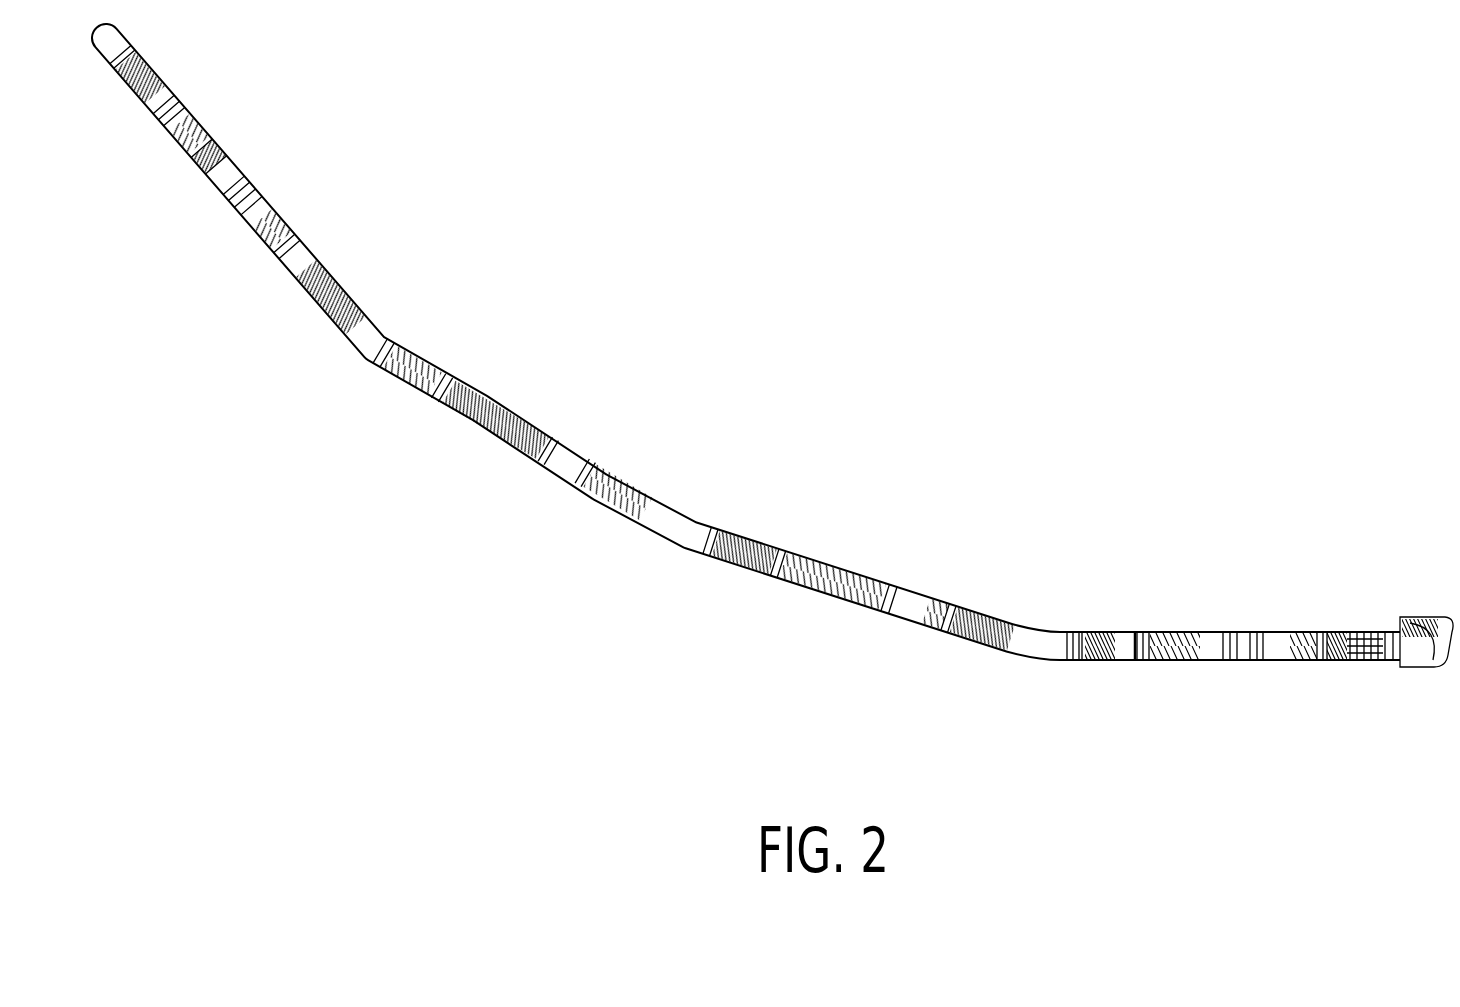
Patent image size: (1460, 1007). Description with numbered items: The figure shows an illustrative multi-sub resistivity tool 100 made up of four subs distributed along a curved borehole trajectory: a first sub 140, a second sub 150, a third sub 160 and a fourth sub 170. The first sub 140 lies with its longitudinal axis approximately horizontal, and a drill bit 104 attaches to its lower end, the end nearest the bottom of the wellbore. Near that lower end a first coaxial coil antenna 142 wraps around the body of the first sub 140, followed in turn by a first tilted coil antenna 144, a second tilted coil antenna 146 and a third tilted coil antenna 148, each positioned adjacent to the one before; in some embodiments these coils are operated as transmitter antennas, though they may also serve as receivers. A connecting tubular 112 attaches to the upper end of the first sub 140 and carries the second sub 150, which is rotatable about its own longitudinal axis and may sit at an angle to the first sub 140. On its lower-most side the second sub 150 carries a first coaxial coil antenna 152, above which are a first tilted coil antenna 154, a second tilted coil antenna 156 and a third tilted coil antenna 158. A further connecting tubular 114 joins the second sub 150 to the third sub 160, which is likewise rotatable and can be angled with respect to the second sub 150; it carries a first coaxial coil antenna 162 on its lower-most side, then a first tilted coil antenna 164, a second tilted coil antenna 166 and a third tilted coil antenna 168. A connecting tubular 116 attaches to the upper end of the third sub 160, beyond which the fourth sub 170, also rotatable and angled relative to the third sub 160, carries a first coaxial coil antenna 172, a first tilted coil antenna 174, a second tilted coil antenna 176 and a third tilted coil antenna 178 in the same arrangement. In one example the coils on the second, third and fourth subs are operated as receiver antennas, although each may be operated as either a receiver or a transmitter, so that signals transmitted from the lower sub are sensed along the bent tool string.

The multi-sub resistivity tool 100 is at (878, 222).
The drill bit 104 is at (1420, 668).
The connecting tubular 112 is at (1047, 631).
The connecting tubular 114 is at (698, 522).
The connecting tubular 116 is at (380, 330).
The first sub 140 is at (1243, 628).
The first coaxial coil antenna 142 is at (1353, 663).
The first tilted coil antenna 144 is at (1267, 662).
The second tilted coil antenna 146 is at (1180, 660).
The third tilted coil antenna 148 is at (1123, 658).
The second sub 150 is at (843, 562).
The first coaxial coil antenna 152 is at (990, 648).
The first tilted coil antenna 154 is at (917, 590).
The second tilted coil antenna 156 is at (827, 600).
The third tilted coil antenna 158 is at (760, 571).
The third sub 160 is at (523, 410).
The first coaxial coil antenna 162 is at (633, 530).
The first tilted coil antenna 164 is at (578, 453).
The second tilted coil antenna 166 is at (488, 436).
The third tilted coil antenna 168 is at (430, 393).
The fourth sub 170 is at (237, 167).
The first coaxial coil antenna 172 is at (320, 313).
The first tilted coil antenna 174 is at (280, 220).
The second tilted coil antenna 176 is at (197, 183).
The third tilted coil antenna 178 is at (160, 126).